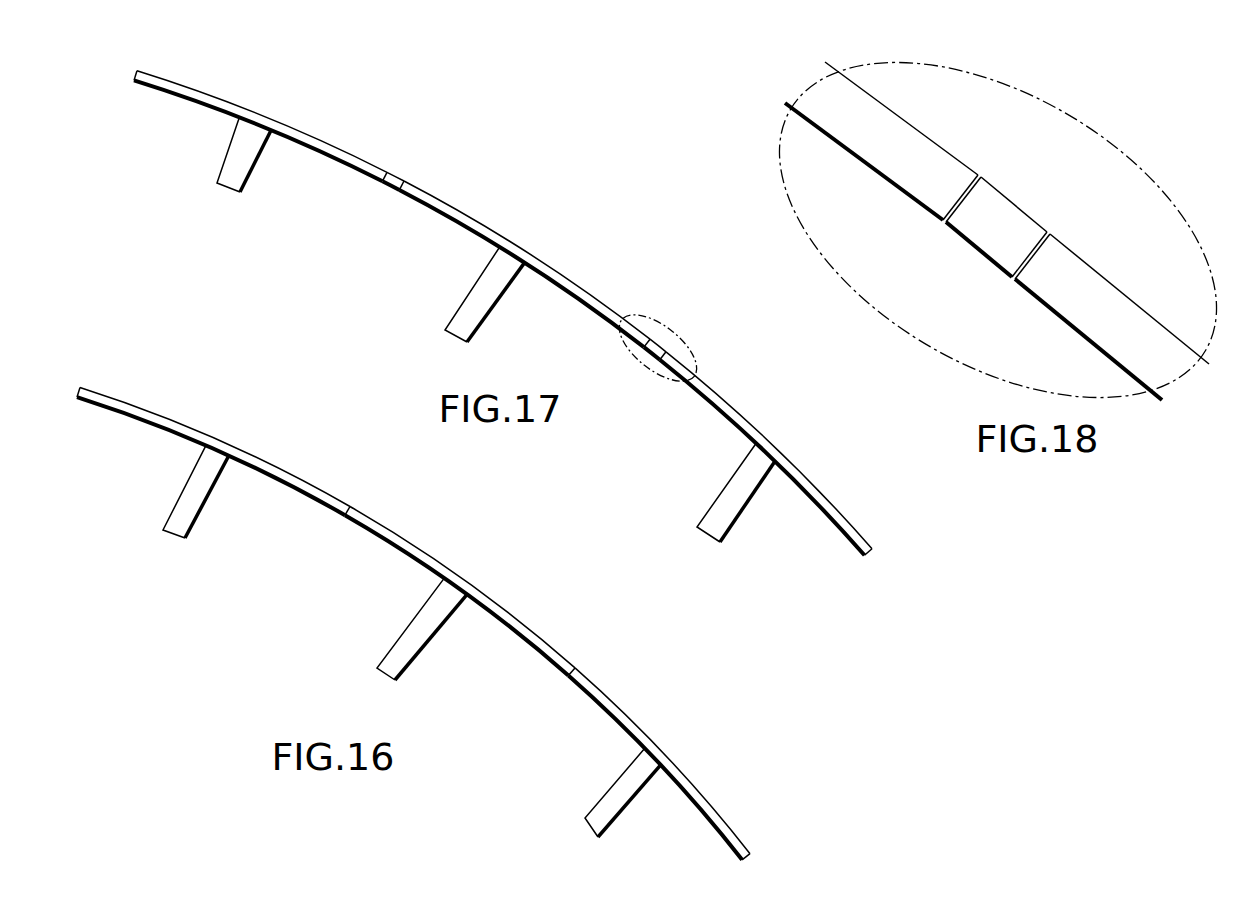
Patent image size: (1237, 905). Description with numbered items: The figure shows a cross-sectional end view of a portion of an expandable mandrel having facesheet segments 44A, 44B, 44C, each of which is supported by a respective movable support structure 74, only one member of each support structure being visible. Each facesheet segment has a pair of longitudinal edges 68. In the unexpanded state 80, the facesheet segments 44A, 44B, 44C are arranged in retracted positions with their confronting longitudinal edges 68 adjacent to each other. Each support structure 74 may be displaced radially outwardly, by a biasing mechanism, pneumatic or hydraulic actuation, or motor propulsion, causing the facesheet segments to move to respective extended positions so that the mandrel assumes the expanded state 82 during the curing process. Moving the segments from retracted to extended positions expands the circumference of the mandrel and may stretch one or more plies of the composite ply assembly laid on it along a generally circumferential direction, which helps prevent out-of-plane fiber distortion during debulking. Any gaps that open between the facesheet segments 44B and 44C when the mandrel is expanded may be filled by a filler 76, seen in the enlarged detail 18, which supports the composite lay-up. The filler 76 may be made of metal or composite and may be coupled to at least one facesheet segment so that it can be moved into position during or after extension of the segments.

In FIG. 17, the enlarged portion of FIG. 17 18 is at (697, 349).
In FIG. 17, the facesheet segment 44A is at (197, 105).
In FIG. 16, the facesheet segment 44A is at (137, 420).
In FIG. 17, the facesheet segment 44B is at (567, 290).
In FIG. 16, the facesheet segment 44B is at (495, 603).
In FIG. 18, the facesheet segment 44B is at (878, 178).
In FIG. 17, the facesheet segment 44C is at (818, 508).
In FIG. 16, the facesheet segment 44C is at (630, 717).
In FIG. 18, the facesheet segment 44C is at (1077, 334).
In FIG. 17, the longitudinal edges 68 is at (383, 185).
In FIG. 16, the longitudinal edges 68 is at (350, 506).
In FIG. 18, the longitudinal edges 68 is at (977, 172).
In FIG. 17, the movable support structure 74 is at (253, 167).
In FIG. 16, the movable support structure 74 is at (207, 507).
In FIG. 17, the filler 76 is at (399, 172).
In FIG. 18, the filler 76 is at (1018, 205).
In FIG. 16, the unexpanded state 80 is at (361, 559).
In FIG. 17, the expanded state 82 is at (447, 236).